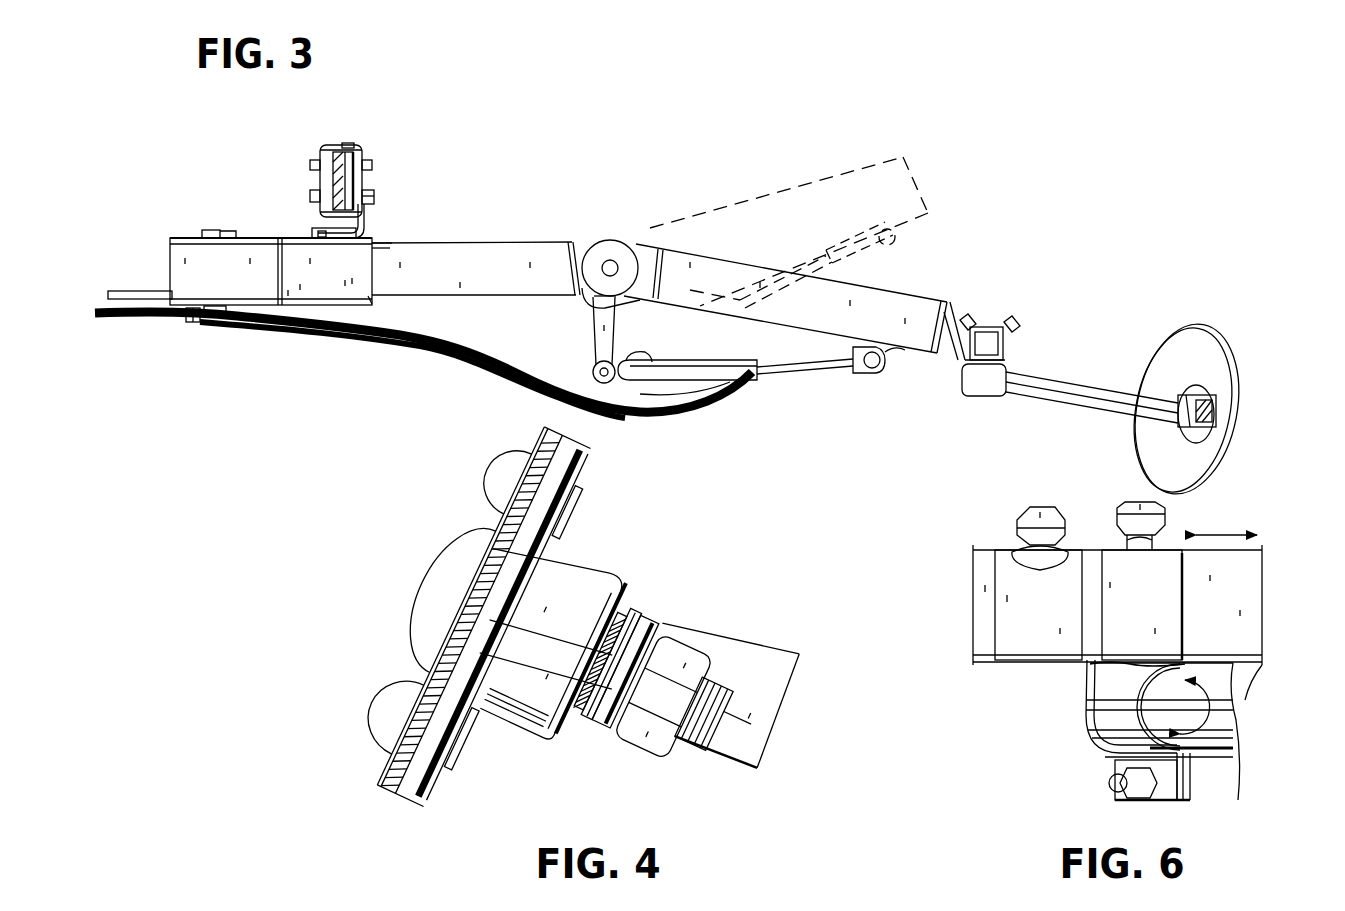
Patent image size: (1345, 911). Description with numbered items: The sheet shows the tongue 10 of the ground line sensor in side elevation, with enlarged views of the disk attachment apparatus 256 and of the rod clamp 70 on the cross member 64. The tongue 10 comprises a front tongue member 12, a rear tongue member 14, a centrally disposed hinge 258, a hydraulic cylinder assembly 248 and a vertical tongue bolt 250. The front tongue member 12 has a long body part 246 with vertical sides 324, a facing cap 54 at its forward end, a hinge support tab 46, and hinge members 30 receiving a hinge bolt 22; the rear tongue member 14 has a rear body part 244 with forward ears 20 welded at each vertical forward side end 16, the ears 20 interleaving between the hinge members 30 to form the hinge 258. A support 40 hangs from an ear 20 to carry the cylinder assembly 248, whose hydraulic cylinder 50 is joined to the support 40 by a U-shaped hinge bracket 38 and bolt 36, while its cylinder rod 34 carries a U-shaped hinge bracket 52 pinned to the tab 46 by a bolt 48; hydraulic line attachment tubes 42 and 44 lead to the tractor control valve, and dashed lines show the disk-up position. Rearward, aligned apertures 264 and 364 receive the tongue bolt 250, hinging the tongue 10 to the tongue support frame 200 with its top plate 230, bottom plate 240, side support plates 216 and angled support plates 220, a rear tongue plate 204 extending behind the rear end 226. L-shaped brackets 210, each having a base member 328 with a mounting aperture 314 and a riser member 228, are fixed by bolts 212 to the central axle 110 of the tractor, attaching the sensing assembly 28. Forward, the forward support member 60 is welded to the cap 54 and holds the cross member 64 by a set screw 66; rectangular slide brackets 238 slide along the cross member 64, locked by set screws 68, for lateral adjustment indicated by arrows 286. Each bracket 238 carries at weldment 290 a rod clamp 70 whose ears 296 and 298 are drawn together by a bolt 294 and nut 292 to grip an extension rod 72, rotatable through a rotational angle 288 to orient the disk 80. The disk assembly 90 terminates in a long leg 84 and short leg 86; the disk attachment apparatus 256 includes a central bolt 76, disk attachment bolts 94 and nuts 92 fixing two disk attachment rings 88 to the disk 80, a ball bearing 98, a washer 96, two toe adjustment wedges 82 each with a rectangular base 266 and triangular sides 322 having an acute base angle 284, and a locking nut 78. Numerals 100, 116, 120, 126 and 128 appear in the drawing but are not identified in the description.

In FIG. 3, the tongue 10 is at (635, 167).
In FIG. 3, the front tongue member 12 is at (745, 203).
In FIG. 3, the rear tongue member 14 is at (480, 242).
In FIG. 3, the vertical forward side end 16 is at (563, 240).
In FIG. 3, the forward ear extension 20 is at (585, 298).
In FIG. 3, the hinge bolt 22 is at (610, 260).
In FIG. 3, the sensing assembly 28 is at (940, 132).
In FIG. 3, the hinge member 30 is at (602, 310).
In FIG. 3, the cylinder rod 34 is at (840, 262).
In FIG. 3, the bolt 36 is at (595, 374).
In FIG. 3, the U-shaped hinge bracket 38 is at (648, 360).
In FIG. 3, the support 40 is at (594, 345).
In FIG. 3, the hydraulic line attachment tube 42 is at (530, 370).
In FIG. 3, the hydraulic line attachment tube 44 is at (720, 400).
In FIG. 3, the hinge support tab 46 is at (893, 358).
In FIG. 3, the bolt 48 is at (865, 372).
In FIG. 3, the hydraulic cylinder 50 is at (700, 365).
In FIG. 3, the U-shaped hinge bracket 52 is at (895, 240).
In FIG. 3, the facing cap 54 is at (962, 325).
In FIG. 3, the forward support member 60 is at (972, 330).
In FIG. 6, the forward support member 60 is at (1020, 618).
In FIG. 3, the cross member 64 is at (1005, 344).
In FIG. 6, the cross member 64 is at (1262, 585).
In FIG. 3, the set screw 66 is at (1013, 323).
In FIG. 6, the set screw 66 is at (1045, 512).
In FIG. 3, the set screw 68 is at (968, 322).
In FIG. 6, the set screw 68 is at (1160, 512).
In FIG. 3, the rod clamp 70 is at (1010, 442).
In FIG. 6, the rod clamp 70 is at (1090, 700).
In FIG. 3, the extension rod 72 is at (1130, 405).
In FIG. 6, the extension rod 72 is at (1235, 760).
In FIG. 3, the central bolt 76 is at (1218, 412).
In FIG. 4, the central bolt 76 is at (424, 610).
In FIG. 3, the locking nut 78 is at (1215, 400).
In FIG. 4, the locking nut 78 is at (707, 657).
In FIG. 3, the disk 80 is at (1228, 360).
In FIG. 4, the disk 80 is at (565, 428).
In FIG. 3, the toe adjustment wedge 82 is at (1200, 455).
In FIG. 4, the toe adjustment wedge 82 is at (655, 620).
In FIG. 3, the long leg 84 is at (1178, 385).
In FIG. 4, the long leg 84 is at (747, 740).
In FIG. 3, the short leg 86 is at (1200, 330).
In FIG. 4, the short leg 86 is at (614, 718).
In FIG. 4, the disk attachment ring 88 is at (508, 518).
In FIG. 3, the disk assembly 90 is at (1068, 466).
In FIG. 4, the nut 92 is at (552, 537).
In FIG. 4, the disk attachment bolt 94 is at (528, 462).
In FIG. 4, the washer 96 is at (602, 580).
In FIG. 4, the ball bearing 98 is at (574, 590).
In FIG. 3, the clamp 100 is at (322, 140).
In FIG. 3, the central axle 110 is at (357, 150).
In FIG. 3, the clamp foot 116 is at (318, 233).
In FIG. 3, the clamp top 120 is at (322, 160).
In FIG. 3, the clamp bolts 126 is at (315, 165).
In FIG. 3, the bolt head 128 is at (348, 147).
In FIG. 3, the tongue support frame 200 is at (372, 300).
In FIG. 3, the rear tongue plate 204 is at (133, 298).
In FIG. 3, the L-shaped bracket 210 is at (368, 228).
In FIG. 3, the bolt 212 is at (373, 197).
In FIG. 3, the side support plate 216 is at (290, 292).
In FIG. 3, the angled support plate 220 is at (345, 283).
In FIG. 3, the rear end 226 is at (168, 250).
In FIG. 3, the riser member 228 is at (365, 215).
In FIG. 3, the top plate 230 is at (185, 240).
In FIG. 6, the rectangular slide bracket 238 is at (1118, 618).
In FIG. 3, the bottom plate 240 is at (192, 323).
In FIG. 3, the rear body part 244 is at (440, 271).
In FIG. 3, the long body part 246 is at (787, 270).
In FIG. 3, the hydraulic cylinder assembly 248 is at (794, 403).
In FIG. 3, the tongue bolt 250 is at (207, 231).
In FIG. 3, the disk attachment apparatus 256 is at (1222, 426).
In FIG. 4, the disk attachment apparatus 256 is at (715, 498).
In FIG. 3, the hinge 258 is at (598, 238).
In FIG. 3, the aperture 264 is at (216, 312).
In FIG. 4, the rectangular base 266 is at (622, 626).
In FIG. 4, the acute base angle 284 is at (648, 620).
In FIG. 6, the arrows 286 is at (1250, 532).
In FIG. 6, the rotational angle 288 is at (1250, 700).
In FIG. 6, the weldment 290 is at (1105, 665).
In FIG. 6, the nut 292 is at (1108, 785).
In FIG. 6, the bolt 294 is at (1113, 780).
In FIG. 6, the ear 296 is at (1125, 805).
In FIG. 6, the ear 298 is at (1190, 785).
In FIG. 3, the mounting aperture 314 is at (392, 246).
In FIG. 4, the triangular side 322 is at (627, 640).
In FIG. 3, the vertical side 324 is at (786, 321).
In FIG. 3, the base member 328 is at (300, 286).
In FIG. 3, the aperture 364 is at (234, 238).